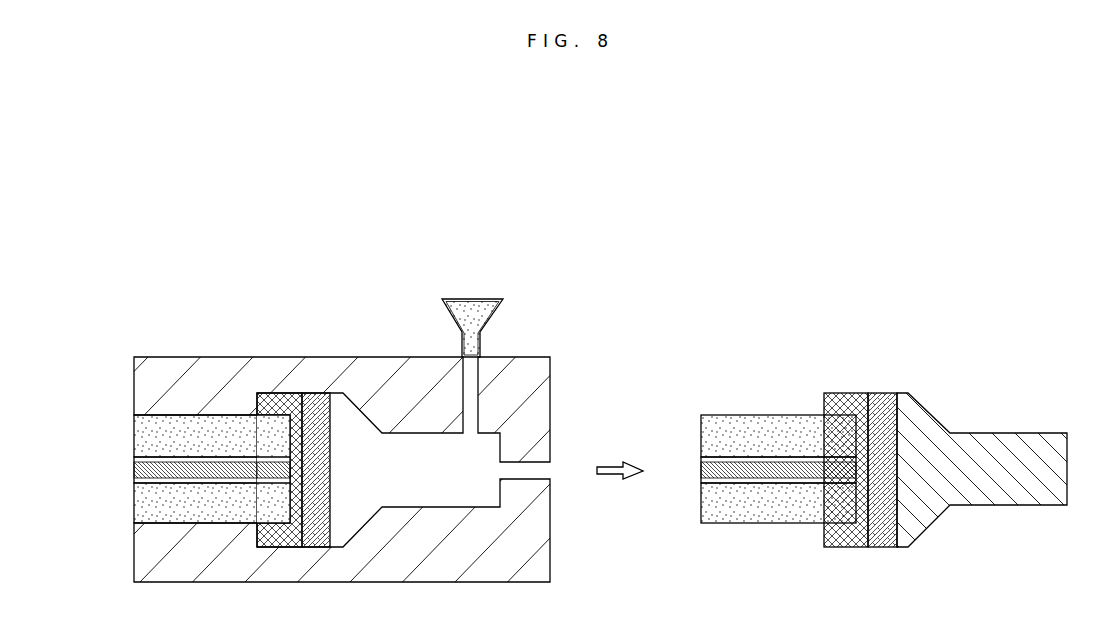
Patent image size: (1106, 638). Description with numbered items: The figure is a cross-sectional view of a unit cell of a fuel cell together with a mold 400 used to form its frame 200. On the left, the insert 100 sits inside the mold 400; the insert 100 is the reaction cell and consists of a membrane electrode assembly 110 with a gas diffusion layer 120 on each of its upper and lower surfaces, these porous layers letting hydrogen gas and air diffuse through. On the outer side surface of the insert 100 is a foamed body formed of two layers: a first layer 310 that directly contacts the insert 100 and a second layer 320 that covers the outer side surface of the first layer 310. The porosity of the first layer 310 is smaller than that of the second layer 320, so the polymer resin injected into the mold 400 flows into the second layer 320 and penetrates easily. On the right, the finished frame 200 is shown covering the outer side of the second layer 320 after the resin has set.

The insert 100 is at (128, 441).
The membrane electrode assembly 110 is at (697, 458).
The gas diffusion layer 120 is at (738, 430).
The frame 200 is at (943, 428).
The first layer 310 is at (278, 397).
The second layer 320 is at (315, 397).
The mold 400 is at (528, 375).